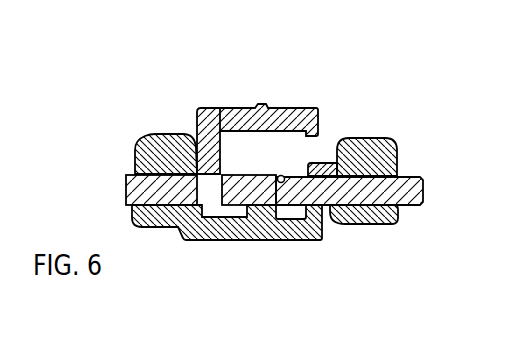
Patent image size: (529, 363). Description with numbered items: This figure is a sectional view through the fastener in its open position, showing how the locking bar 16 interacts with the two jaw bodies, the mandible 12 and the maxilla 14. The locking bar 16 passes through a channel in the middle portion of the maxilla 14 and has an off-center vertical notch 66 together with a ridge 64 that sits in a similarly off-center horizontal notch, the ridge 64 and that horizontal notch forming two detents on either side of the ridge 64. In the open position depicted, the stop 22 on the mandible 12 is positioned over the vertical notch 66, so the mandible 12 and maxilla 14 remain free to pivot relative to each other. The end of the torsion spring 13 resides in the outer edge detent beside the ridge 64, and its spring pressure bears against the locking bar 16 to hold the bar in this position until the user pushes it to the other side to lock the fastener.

The mandible 12 is at (285, 106).
The stop 22 is at (200, 153).
The maxilla 14 is at (137, 153).
The locking bar 16 is at (415, 192).
The torsion spring 13 is at (280, 183).
The ridge 64 is at (285, 180).
The vertical notch 66 is at (208, 203).